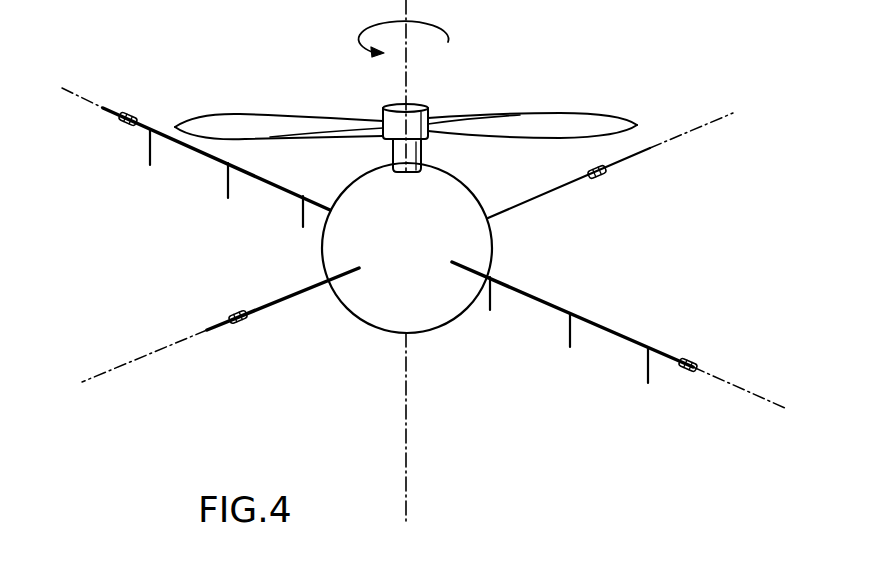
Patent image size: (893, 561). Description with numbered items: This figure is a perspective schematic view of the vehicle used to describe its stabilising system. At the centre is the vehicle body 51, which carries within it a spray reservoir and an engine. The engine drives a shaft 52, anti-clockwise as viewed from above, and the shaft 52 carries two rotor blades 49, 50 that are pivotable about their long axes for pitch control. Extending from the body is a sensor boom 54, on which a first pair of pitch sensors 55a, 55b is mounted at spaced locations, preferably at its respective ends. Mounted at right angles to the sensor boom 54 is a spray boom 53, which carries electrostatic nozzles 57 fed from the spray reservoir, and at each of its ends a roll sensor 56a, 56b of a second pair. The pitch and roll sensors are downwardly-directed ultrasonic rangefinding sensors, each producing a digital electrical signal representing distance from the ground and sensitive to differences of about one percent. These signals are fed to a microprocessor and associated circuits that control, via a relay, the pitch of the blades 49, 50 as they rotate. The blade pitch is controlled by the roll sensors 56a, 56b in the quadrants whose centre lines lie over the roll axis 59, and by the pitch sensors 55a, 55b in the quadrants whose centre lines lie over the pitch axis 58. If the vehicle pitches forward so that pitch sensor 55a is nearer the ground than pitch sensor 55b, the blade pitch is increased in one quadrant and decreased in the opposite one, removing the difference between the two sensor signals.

The rotor blade 49 is at (257, 80).
The rotor blade 50 is at (557, 127).
The vehicle body 51 is at (362, 305).
The shaft 52 is at (413, 110).
The spray boom 53 is at (623, 332).
The sensor boom 54 is at (535, 198).
The pitch sensor 55a is at (605, 178).
The pitch sensor 55b is at (232, 313).
The roll sensor 56a is at (688, 372).
The roll sensor 56b is at (122, 125).
The electrostatic nozzles 57 is at (228, 183).
The pitch axis 58 is at (73, 93).
The roll axis 59 is at (677, 140).